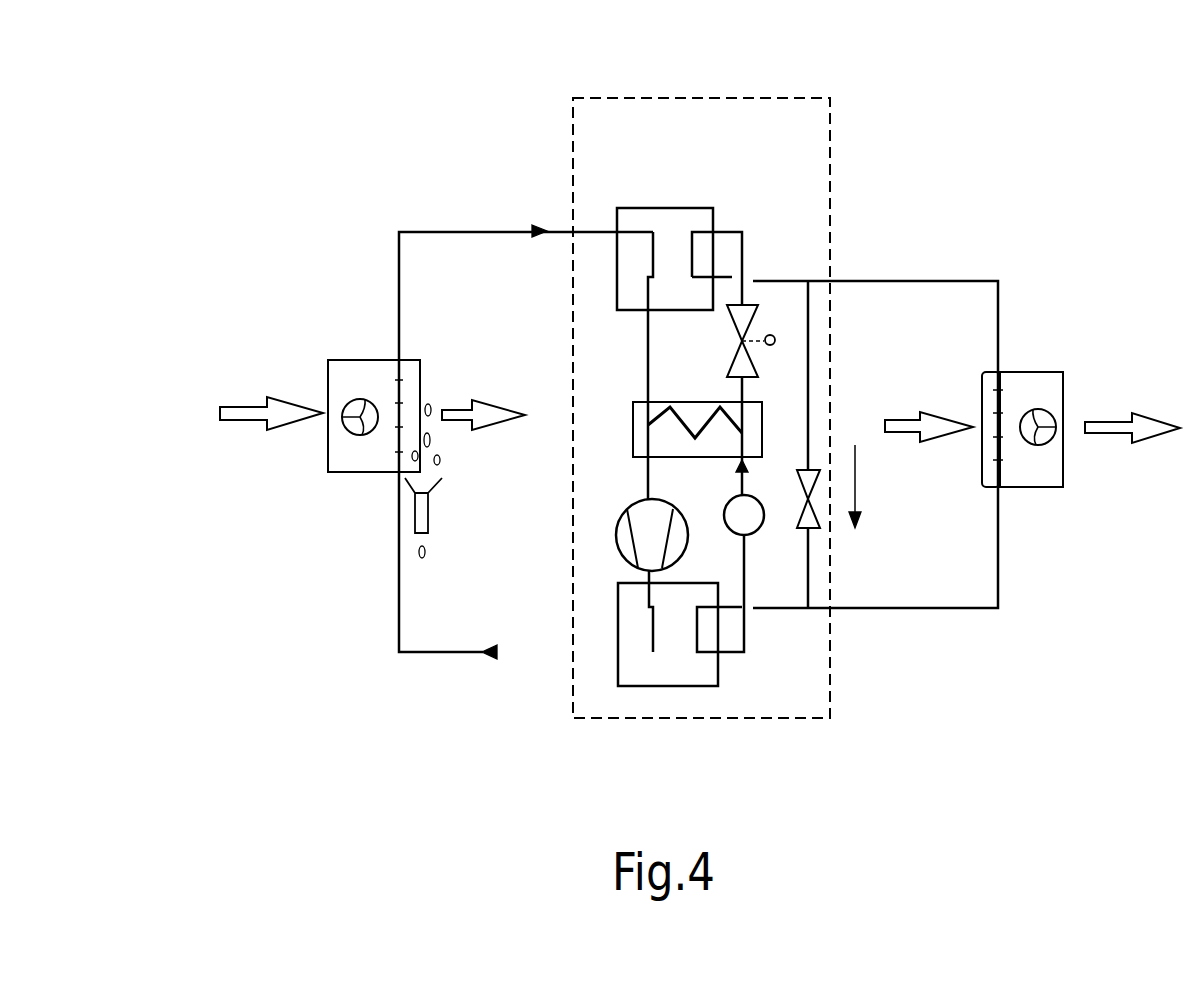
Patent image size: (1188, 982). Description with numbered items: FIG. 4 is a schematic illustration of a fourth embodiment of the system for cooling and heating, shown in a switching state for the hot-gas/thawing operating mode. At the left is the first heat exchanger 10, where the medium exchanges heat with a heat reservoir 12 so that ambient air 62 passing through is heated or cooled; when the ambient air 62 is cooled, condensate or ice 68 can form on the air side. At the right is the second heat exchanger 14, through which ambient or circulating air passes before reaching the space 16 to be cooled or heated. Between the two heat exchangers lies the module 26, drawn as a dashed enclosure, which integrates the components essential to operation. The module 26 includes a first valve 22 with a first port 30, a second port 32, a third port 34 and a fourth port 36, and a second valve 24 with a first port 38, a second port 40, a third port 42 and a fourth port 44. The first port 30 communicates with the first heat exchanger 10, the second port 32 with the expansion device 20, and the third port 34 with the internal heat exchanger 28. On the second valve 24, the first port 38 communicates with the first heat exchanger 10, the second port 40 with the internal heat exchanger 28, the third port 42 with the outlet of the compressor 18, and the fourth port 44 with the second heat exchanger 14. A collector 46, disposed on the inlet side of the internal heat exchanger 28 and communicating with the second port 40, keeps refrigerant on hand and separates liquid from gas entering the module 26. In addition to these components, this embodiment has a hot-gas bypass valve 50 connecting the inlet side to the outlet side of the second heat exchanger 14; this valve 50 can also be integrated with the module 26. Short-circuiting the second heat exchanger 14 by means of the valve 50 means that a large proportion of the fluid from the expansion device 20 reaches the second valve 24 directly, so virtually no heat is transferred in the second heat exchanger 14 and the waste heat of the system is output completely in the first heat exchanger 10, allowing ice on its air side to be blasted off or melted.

The first heat exchanger 10 is at (343, 457).
The heat reservoir 12 is at (345, 327).
The second heat exchanger 14 is at (1040, 378).
The space 16 is at (1150, 392).
The compressor 18 is at (613, 538).
The expansion device 20 is at (765, 312).
The first valve 22 is at (692, 315).
The second valve 24 is at (697, 693).
The module 26 is at (627, 118).
The internal heat exchanger 28 is at (765, 410).
The first port 30 is at (643, 225).
The second port 32 is at (690, 227).
The third port 34 is at (645, 280).
The fourth port 36 is at (692, 280).
The first port 38 is at (647, 657).
The second port 40 is at (698, 657).
The third port 42 is at (643, 612).
The fourth port 44 is at (687, 597).
The collector 46 is at (757, 527).
The hot-gas bypass valve 50 is at (818, 528).
The ambient air 62 is at (242, 423).
The condensate or ice 68 is at (415, 532).